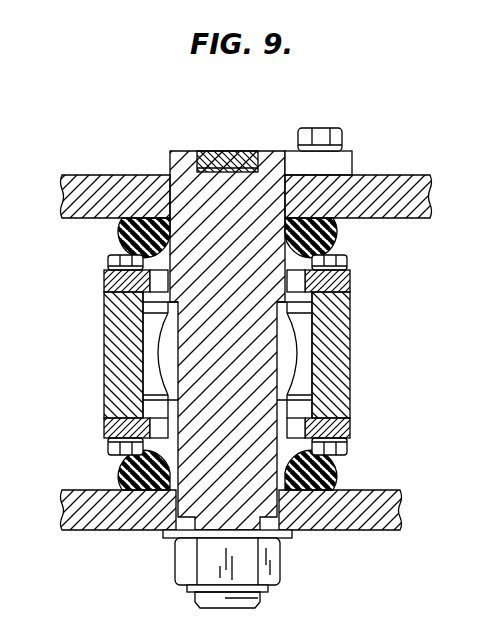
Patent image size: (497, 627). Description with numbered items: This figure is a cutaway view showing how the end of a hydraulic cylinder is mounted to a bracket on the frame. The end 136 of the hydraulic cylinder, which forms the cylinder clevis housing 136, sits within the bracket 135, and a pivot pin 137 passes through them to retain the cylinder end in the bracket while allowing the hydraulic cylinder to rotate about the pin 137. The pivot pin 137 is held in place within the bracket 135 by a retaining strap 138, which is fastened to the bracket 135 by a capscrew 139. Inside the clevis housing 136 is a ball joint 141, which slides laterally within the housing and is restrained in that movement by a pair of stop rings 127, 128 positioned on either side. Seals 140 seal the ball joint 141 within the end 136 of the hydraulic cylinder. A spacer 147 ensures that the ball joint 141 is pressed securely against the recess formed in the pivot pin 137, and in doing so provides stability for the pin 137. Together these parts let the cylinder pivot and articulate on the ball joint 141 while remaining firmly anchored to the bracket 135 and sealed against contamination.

The pivot pin 137 is at (178, 150).
The retaining strap 138 is at (229, 151).
The capscrew 139 is at (321, 128).
The bracket 135 is at (386, 175).
The spacer 147 is at (150, 490).
The seals 140 is at (122, 238).
The stop ring 128 is at (350, 278).
The stop ring 127 is at (350, 428).
The end of hydraulic cylinder (cylinder clevis housing) 136 is at (350, 352).
The ball joint 141 is at (298, 318).